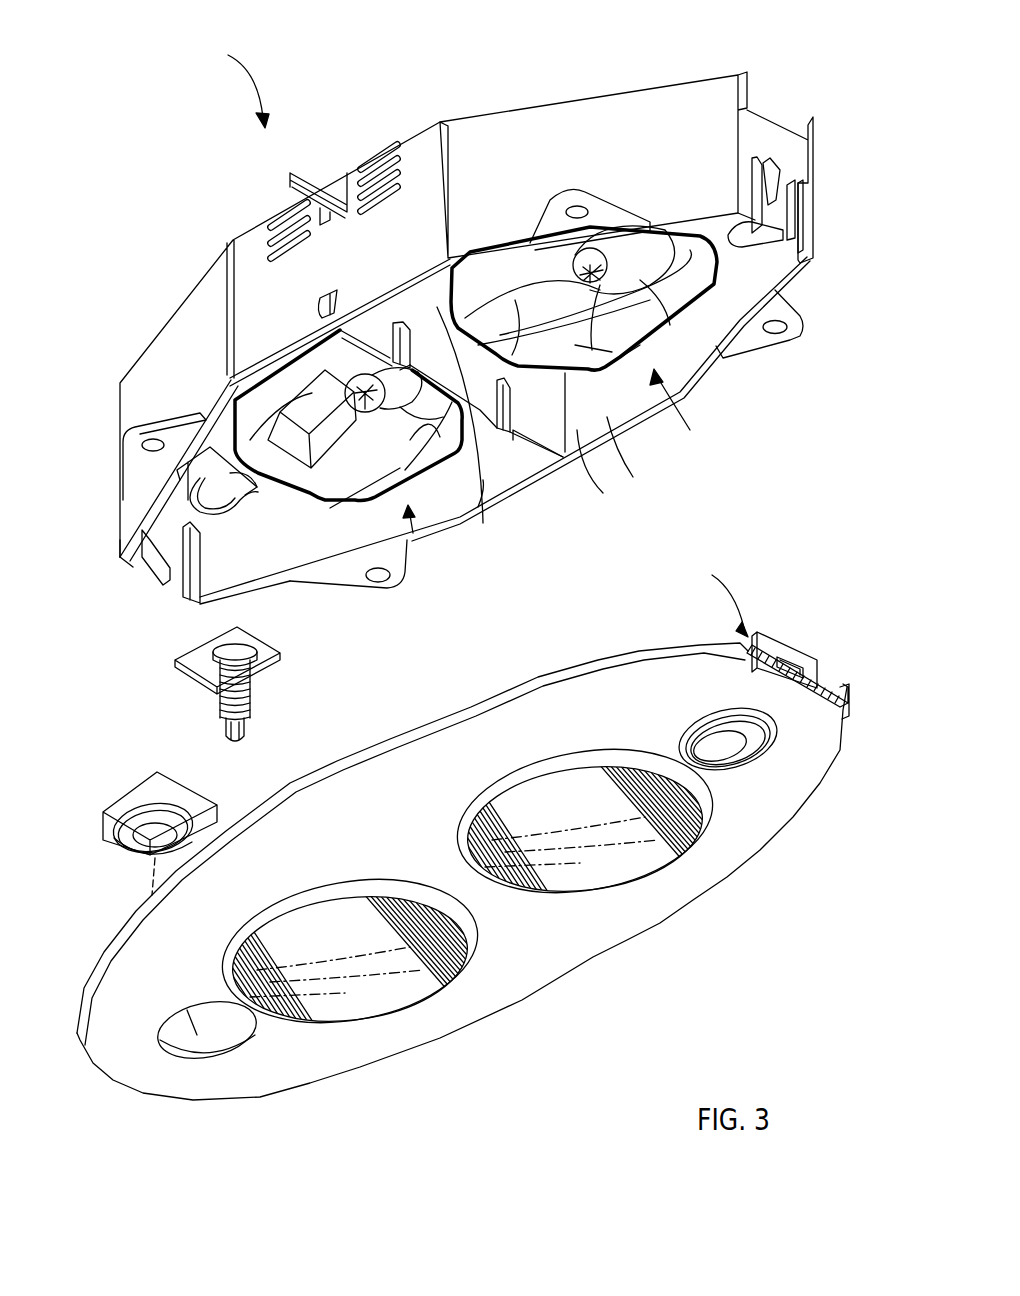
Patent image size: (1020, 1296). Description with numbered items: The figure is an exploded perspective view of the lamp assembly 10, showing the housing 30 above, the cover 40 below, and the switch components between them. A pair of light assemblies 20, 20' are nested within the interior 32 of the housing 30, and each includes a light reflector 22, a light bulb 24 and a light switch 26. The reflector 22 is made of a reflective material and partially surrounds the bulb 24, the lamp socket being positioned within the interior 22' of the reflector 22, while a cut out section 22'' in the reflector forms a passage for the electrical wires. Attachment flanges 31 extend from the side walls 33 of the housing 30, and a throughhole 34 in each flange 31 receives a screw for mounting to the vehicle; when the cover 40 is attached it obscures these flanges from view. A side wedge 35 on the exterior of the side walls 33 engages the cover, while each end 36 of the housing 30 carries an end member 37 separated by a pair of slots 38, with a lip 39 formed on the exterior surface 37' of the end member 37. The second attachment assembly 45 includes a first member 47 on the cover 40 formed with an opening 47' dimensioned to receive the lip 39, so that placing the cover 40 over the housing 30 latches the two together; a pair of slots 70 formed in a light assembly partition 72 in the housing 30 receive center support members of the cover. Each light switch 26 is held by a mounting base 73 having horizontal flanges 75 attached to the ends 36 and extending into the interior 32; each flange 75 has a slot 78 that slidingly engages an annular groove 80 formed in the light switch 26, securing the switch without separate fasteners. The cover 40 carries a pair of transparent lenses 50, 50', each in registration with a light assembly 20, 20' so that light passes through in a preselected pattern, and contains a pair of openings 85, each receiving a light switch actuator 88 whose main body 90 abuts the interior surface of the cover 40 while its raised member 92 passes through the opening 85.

The lamp assembly 10 is at (237, 77).
The light assembly 20 is at (465, 430).
The light assembly 20' is at (684, 408).
The light reflector 22 is at (488, 385).
The interior of light reflector 22' is at (487, 444).
The cut out section 22'' is at (269, 400).
The light bulb 24 is at (580, 262).
The light switch 26 is at (203, 670).
The housing 30 is at (548, 127).
The attachment flange 31 is at (138, 447).
The interior 32 is at (510, 434).
The side wall 33 is at (247, 280).
The throughhole 34 is at (150, 450).
The side wedge 35 is at (317, 303).
The end 36 is at (120, 537).
The end member 37 is at (452, 343).
The exterior surface of end member 37' is at (822, 157).
The slot 38 is at (187, 583).
The lip 39 is at (787, 225).
The cover 40 is at (517, 983).
The second attachment assembly 45 is at (774, 633).
The first member 47 is at (782, 630).
The opening 47' is at (801, 627).
The lens 50 is at (350, 983).
The lens 50' is at (585, 853).
The slot 70 is at (407, 327).
The light assembly partition 72 is at (543, 430).
The mounting base 73 is at (232, 473).
The horizontal flange 75 is at (190, 503).
The slot 78 is at (200, 490).
The annular groove 80 is at (257, 653).
The opening 85 is at (223, 1033).
The light switch actuator 88 is at (127, 843).
The main body 90 is at (123, 795).
The raised member 92 is at (183, 830).